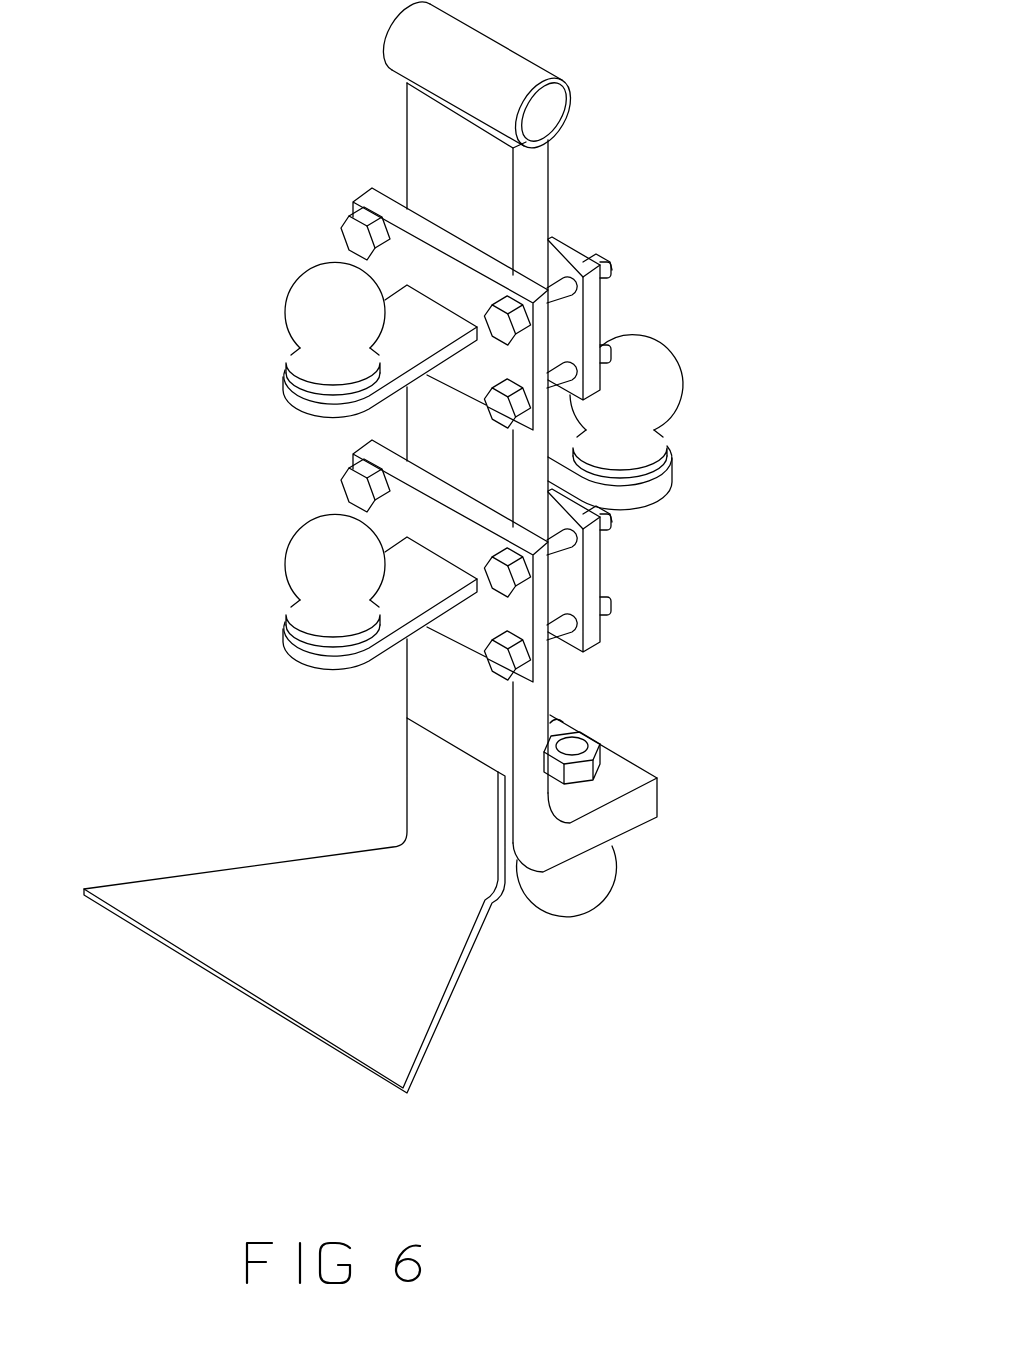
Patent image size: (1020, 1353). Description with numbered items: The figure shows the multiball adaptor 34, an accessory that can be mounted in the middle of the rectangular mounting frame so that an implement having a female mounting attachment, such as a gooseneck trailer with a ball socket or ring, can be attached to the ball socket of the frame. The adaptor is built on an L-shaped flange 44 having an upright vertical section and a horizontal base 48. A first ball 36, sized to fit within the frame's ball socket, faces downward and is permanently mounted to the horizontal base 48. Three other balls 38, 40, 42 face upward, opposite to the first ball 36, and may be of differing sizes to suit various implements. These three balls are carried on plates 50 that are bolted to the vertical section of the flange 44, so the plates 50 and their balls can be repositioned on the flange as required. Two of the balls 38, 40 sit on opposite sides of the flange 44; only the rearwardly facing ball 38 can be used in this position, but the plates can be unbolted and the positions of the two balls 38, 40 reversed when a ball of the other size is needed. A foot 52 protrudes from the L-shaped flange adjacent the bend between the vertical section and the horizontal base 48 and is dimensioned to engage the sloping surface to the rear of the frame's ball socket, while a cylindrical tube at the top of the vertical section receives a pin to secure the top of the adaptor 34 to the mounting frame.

The multiball adaptor 34 is at (692, 488).
The first ball 36 is at (598, 895).
The ball 38 is at (300, 563).
The ball 40 is at (655, 380).
The ball 42 is at (313, 318).
The L-shaped flange 44 is at (430, 150).
The horizontal base 48 is at (662, 806).
The plates 50 is at (405, 253).
The foot 52 is at (437, 965).